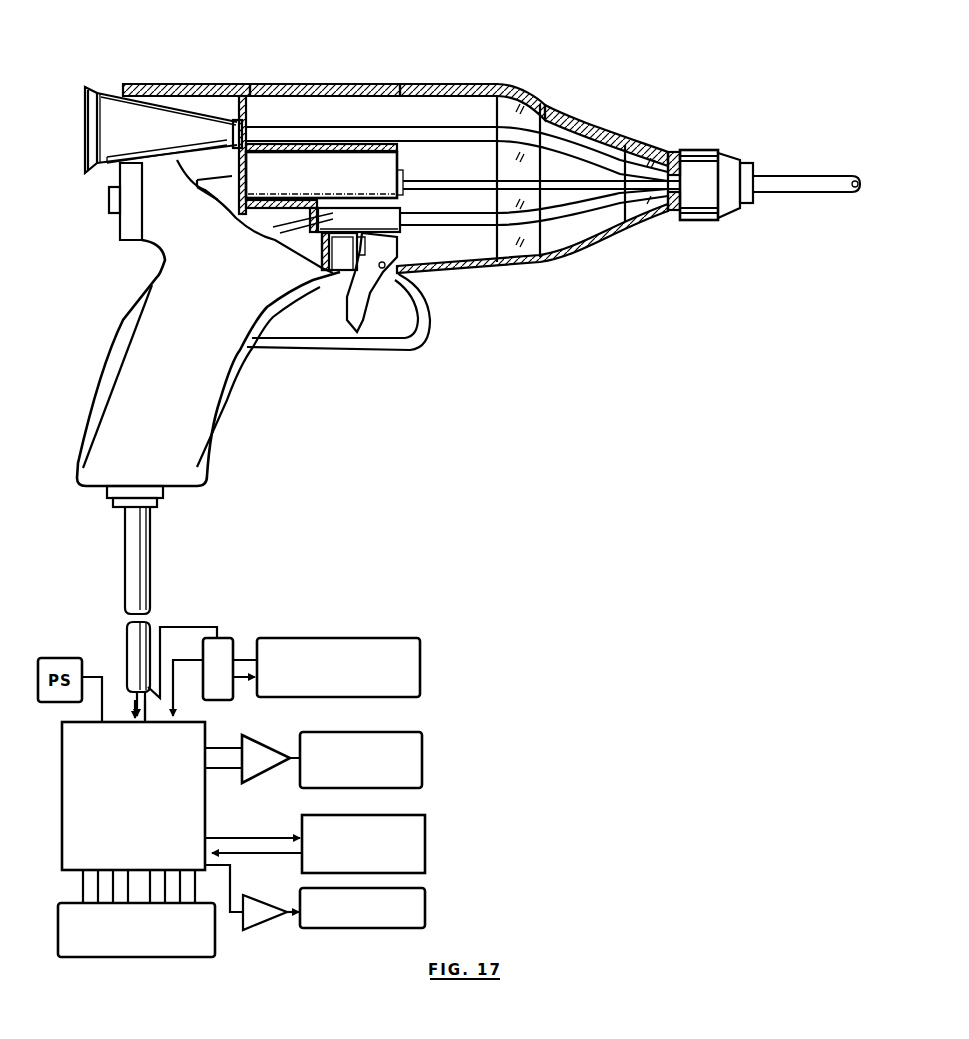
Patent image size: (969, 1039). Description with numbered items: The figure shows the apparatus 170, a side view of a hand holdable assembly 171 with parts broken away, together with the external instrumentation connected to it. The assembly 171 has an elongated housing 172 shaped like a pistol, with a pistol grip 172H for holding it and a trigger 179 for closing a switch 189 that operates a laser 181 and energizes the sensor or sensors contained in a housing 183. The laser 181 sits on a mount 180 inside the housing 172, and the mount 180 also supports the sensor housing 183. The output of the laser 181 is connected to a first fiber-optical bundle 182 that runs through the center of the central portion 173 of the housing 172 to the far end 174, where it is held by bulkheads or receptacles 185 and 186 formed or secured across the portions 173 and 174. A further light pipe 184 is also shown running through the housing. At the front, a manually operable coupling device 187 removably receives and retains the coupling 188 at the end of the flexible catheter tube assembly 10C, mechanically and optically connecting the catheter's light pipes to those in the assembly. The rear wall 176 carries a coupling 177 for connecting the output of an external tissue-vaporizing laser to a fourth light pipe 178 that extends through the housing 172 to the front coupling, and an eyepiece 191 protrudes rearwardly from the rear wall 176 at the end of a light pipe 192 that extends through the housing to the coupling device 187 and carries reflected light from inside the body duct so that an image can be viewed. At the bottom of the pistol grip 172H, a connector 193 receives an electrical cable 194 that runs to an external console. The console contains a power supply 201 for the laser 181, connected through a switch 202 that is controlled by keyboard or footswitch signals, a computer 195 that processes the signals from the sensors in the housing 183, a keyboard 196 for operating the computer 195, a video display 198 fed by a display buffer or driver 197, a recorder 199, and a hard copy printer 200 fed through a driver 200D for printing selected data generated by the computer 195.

The apparatus 170 is at (166, 38).
The hand holdable assembly 171 is at (167, 85).
The elongated housing 172 is at (293, 82).
The pistol grip 172H is at (125, 377).
The central portion of the housing 173 is at (397, 83).
The far end of the housing 174 is at (663, 143).
The rear wall 176 is at (132, 177).
The coupling 177 is at (107, 212).
The fourth light pipe 178 is at (233, 175).
The trigger 179 is at (372, 332).
The mount 180 is at (365, 135).
The laser 181 is at (283, 185).
The first fiber-optical bundle 182 is at (480, 183).
The sensor housing 183 is at (385, 213).
The lower light tube 184 is at (487, 222).
The bulkhead 185 is at (517, 112).
The bulkhead 186 is at (655, 210).
The manually operable coupling device 187 is at (733, 205).
The coupling 188 is at (750, 188).
The switch 189 is at (340, 255).
The eyepiece 191 is at (90, 137).
The light pipe 192 is at (242, 123).
The connector 193 is at (117, 500).
The electrical cable 194 is at (132, 570).
The computer 195 is at (148, 833).
The keyboard 196 is at (137, 960).
The display buffer or driver 197 is at (260, 745).
The display 198 is at (403, 743).
The video display 199 is at (410, 823).
The printer 200 is at (420, 900).
The printer driver amplifier 200D is at (254, 913).
The power supply 201 is at (390, 652).
The switch 202 is at (220, 643).
The flexible catheter tube assembly 10C is at (813, 180).